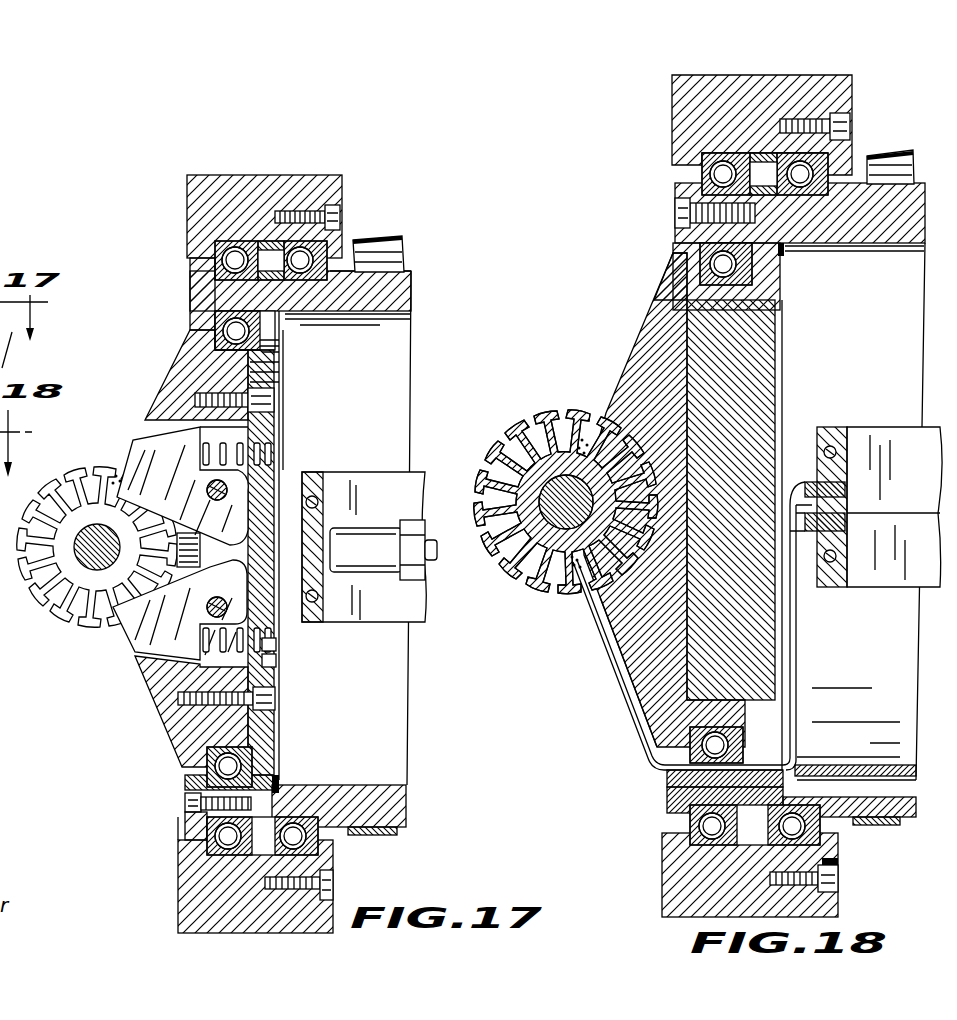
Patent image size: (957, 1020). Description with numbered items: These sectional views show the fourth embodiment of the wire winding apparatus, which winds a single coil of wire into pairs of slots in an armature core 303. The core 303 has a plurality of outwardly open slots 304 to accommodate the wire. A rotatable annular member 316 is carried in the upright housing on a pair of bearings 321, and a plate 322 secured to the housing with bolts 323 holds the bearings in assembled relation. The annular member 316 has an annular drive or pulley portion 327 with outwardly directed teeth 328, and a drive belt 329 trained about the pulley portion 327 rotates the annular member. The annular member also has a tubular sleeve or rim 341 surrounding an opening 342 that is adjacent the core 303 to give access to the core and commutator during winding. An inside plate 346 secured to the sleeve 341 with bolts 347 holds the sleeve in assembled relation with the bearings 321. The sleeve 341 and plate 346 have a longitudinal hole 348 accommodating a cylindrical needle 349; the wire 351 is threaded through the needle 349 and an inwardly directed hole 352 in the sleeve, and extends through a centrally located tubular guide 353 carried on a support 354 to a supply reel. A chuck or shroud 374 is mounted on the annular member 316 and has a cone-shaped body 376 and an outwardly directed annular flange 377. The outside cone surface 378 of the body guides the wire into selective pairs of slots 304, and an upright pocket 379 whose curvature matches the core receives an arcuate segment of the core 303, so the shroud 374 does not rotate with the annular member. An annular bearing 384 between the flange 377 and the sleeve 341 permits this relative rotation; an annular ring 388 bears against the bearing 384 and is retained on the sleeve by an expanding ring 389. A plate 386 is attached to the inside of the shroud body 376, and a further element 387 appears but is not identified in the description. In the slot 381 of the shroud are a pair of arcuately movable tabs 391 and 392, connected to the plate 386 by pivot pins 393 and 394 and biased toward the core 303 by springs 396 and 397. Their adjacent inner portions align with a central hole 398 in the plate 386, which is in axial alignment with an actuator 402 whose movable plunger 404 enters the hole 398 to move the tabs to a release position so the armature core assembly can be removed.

In FIG. 17, the armature core 303 is at (97, 620).
In FIG. 18, the armature core 303 is at (533, 420).
In FIG. 17, the outwardly open slots 304 is at (113, 472).
In FIG. 18, the outwardly open slots 304 is at (584, 432).
In FIG. 17, the rotatable annular member 316 is at (428, 292).
In FIG. 18, the rotatable annular member 316 is at (932, 187).
In FIG. 17, the bearings 321 is at (235, 251).
In FIG. 17, the plate 322 is at (343, 203).
In FIG. 17, the bolts 323 is at (342, 220).
In FIG. 17, the annular drive or pulley portion 327 is at (397, 295).
In FIG. 18, the annular drive or pulley portion 327 is at (910, 210).
In FIG. 17, the outwardly directed teeth 328 is at (411, 270).
In FIG. 17, the drive belt 329 is at (380, 243).
In FIG. 18, the drive belt 329 is at (885, 160).
In FIG. 17, the tubular sleeve or rim 341 is at (378, 320).
In FIG. 18, the tubular sleeve or rim 341 is at (875, 225).
In FIG. 17, the opening 342 is at (385, 412).
In FIG. 18, the opening 342 is at (883, 352).
In FIG. 17, the inside plate 346 is at (188, 780).
In FIG. 17, the bolts 347 is at (188, 808).
In FIG. 18, the longitudinal hole 348 is at (903, 783).
In FIG. 18, the cylindrical needle 349 is at (667, 787).
In FIG. 18, the wire 351 is at (628, 687).
In FIG. 18, the inwardly directed hole 352 is at (795, 765).
In FIG. 18, the tubular guide 353 is at (797, 480).
In FIG. 18, the support 354 is at (832, 432).
In FIG. 17, the chuck or shroud 374 is at (170, 330).
In FIG. 18, the chuck or shroud 374 is at (633, 275).
In FIG. 17, the cone-shaped body 376 is at (180, 372).
In FIG. 17, the annular flange 377 is at (281, 372).
In FIG. 18, the annular flange 377 is at (732, 297).
In FIG. 17, the outside cone surface 378 is at (190, 333).
In FIG. 18, the outside cone surface 378 is at (645, 335).
In FIG. 18, the upright pocket 379 is at (612, 604).
In FIG. 17, the slot 381 is at (150, 688).
In FIG. 17, the annular bearing 384 is at (281, 347).
In FIG. 18, the annular bearing 384 is at (742, 262).
In FIG. 17, the plate 386 is at (270, 686).
In FIG. 18, the plate 386 is at (752, 650).
In FIG. 17, the adjusting screw 387 is at (275, 700).
In FIG. 17, the annular ring 388 is at (275, 772).
In FIG. 17, the expanding ring 389 is at (280, 785).
In FIG. 17, the tab 391 is at (133, 440).
In FIG. 17, the tab 392 is at (135, 640).
In FIG. 17, the pivot pin 393 is at (265, 482).
In FIG. 17, the pivot pin 394 is at (264, 643).
In FIG. 17, the spring 396 is at (281, 430).
In FIG. 17, the spring 397 is at (268, 660).
In FIG. 17, the central hole 398 is at (262, 540).
In FIG. 17, the actuator 402 is at (420, 633).
In FIG. 17, the movable plunger 404 is at (378, 535).